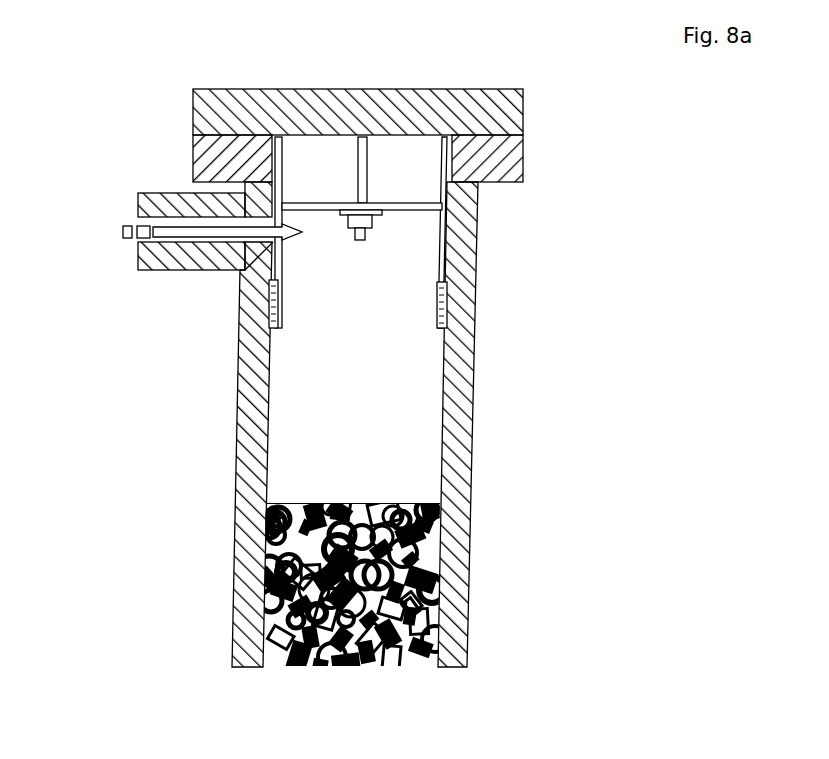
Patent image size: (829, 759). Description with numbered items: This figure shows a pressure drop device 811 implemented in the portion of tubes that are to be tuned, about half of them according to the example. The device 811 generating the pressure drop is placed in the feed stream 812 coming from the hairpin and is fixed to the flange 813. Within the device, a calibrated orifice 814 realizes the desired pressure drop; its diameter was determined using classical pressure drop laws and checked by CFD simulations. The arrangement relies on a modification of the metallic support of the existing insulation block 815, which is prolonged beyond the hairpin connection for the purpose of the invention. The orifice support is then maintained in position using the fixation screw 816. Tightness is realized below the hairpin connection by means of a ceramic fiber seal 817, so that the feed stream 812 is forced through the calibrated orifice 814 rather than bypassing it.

The device generating the pressure drop 811 is at (242, 297).
The feed stream 812 is at (92, 230).
The flange 813 is at (266, 133).
The calibrated orifice 814 is at (266, 277).
The insulation block 815 is at (430, 172).
The fixation screw 816 is at (384, 233).
The ceramic fiber seal 817 is at (452, 310).